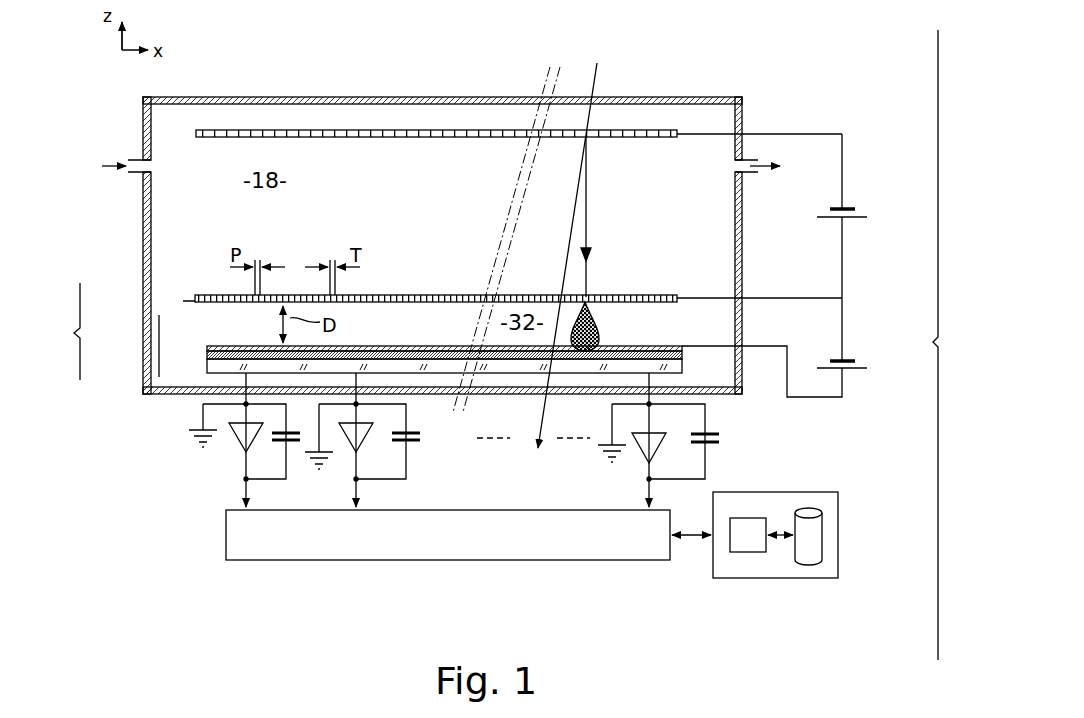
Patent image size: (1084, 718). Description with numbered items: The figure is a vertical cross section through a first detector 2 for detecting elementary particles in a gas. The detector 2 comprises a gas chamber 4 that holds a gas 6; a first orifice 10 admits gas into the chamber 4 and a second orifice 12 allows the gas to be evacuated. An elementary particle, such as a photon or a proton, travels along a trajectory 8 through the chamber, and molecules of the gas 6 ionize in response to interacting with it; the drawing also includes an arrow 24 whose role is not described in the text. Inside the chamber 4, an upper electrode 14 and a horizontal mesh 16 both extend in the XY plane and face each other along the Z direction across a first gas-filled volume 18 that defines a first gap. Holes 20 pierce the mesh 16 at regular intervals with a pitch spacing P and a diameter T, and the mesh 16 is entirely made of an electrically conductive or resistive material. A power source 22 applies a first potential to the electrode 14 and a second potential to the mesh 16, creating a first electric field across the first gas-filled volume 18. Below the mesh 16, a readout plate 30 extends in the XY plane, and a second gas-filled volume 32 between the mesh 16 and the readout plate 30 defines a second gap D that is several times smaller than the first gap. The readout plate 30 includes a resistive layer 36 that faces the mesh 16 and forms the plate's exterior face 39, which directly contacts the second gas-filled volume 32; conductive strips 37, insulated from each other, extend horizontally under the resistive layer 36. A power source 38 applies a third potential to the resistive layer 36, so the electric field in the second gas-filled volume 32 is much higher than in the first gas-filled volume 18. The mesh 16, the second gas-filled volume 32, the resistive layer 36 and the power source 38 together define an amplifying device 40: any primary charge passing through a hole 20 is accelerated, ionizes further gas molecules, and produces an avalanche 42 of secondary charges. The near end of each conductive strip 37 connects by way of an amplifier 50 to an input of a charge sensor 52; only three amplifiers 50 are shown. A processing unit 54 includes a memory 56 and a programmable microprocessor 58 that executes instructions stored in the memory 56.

The first detector 2 is at (947, 345).
The gas chamber 4 is at (442, 202).
The gas 6 is at (167, 127).
The trajectory 8 is at (598, 76).
The first orifice 10 is at (128, 168).
The second orifice 12 is at (752, 172).
The upper electrode 14 is at (438, 140).
The horizontal mesh 16 is at (190, 300).
The first gas-filled volume 18 is at (400, 215).
The holes 20 is at (395, 293).
The power source 22 is at (864, 215).
The ion drift direction 24 is at (588, 208).
The readout plate 30 is at (383, 346).
The second gas-filled volume 32 is at (435, 325).
The resistive layer 36 is at (212, 349).
The conductive strips 37 is at (212, 366).
The power source 38 is at (870, 363).
The exterior face 39 is at (245, 347).
The amplifying device 40 is at (361, 333).
The avalanche 42 is at (600, 320).
The amplifier 50 is at (236, 468).
The charge sensor 52 is at (232, 535).
The processing unit 54 is at (782, 581).
The memory 56 is at (805, 552).
The programmable microprocessor 58 is at (745, 552).